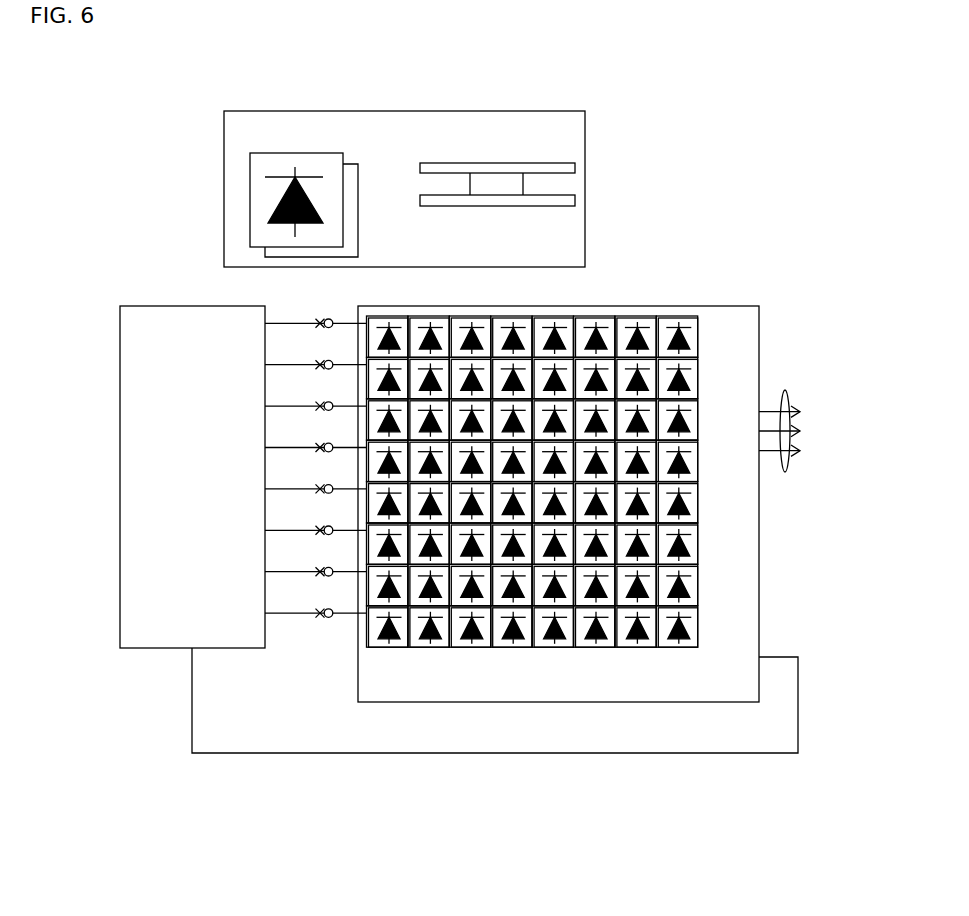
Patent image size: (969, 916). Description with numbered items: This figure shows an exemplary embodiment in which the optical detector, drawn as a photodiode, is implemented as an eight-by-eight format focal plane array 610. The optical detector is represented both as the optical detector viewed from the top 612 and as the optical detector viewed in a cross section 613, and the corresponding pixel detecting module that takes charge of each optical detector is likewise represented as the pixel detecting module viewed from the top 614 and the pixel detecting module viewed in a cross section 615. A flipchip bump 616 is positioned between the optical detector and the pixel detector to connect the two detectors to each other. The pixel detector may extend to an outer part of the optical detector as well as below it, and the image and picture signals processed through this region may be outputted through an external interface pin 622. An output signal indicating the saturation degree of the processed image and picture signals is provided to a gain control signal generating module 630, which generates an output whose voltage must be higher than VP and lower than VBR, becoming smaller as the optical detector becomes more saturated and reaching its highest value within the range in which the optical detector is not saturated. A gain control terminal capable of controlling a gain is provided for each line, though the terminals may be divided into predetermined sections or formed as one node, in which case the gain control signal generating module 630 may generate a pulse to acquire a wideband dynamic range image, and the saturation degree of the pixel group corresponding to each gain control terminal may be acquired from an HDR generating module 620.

The focal plane array 610 is at (700, 330).
The optical detector viewed from the top 612 is at (250, 188).
The optical detector viewed in a cross section 613 is at (576, 167).
The pixel detecting module viewed from the top 614 is at (353, 160).
The pixel detecting module viewed in a cross section 615 is at (576, 201).
The flipchip bump 616 is at (492, 182).
The HDR generating module 620 is at (760, 616).
The external interface pin 622 is at (787, 470).
The gain control signal generating module 630 is at (120, 531).